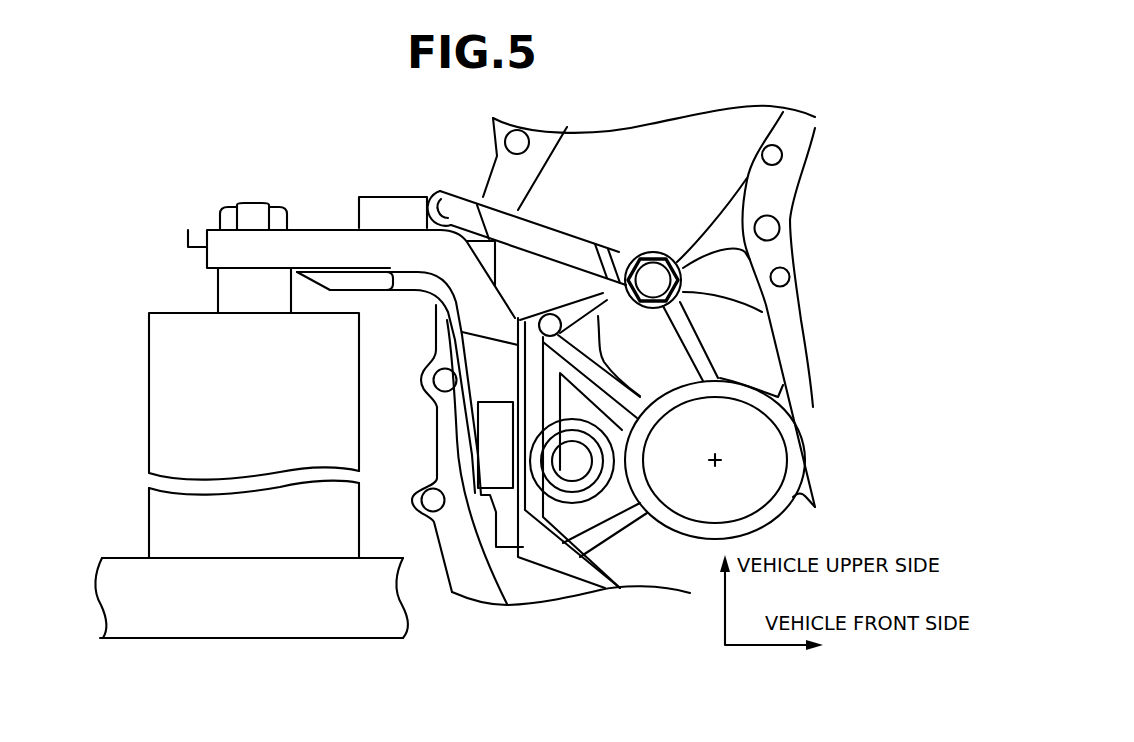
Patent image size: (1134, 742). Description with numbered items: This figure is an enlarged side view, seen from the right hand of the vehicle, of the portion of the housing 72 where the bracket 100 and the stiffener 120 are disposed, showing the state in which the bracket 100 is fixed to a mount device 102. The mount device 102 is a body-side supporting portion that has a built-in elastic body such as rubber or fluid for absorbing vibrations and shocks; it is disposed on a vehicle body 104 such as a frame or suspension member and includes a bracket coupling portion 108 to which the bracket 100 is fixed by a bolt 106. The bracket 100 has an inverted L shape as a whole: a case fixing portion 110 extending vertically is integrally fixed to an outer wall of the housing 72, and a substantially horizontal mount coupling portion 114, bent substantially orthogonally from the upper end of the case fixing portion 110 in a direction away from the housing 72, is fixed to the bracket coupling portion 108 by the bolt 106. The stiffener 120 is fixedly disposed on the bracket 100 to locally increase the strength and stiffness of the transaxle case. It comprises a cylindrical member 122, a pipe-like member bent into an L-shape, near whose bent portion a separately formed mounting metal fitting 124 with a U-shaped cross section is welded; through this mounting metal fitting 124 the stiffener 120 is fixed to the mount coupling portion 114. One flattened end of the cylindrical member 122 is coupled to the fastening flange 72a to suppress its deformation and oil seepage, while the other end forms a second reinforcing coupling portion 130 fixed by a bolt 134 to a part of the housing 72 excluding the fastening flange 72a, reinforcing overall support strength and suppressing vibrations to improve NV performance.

The housing 72 is at (697, 103).
The fastening flange 72a is at (458, 555).
The bracket 100 is at (404, 358).
The mount device 102 is at (170, 427).
The vehicle body 104 is at (225, 622).
The bolt 106 is at (247, 217).
The bracket coupling portion 108 is at (237, 292).
The case fixing portion 110 is at (490, 373).
The mount coupling portion 114 is at (313, 240).
The stiffener 120 is at (643, 209).
The cylindrical member 122 is at (460, 207).
The mounting metal fitting 124 is at (385, 217).
The second reinforcing coupling portion 130 is at (677, 298).
The bolt 134 is at (660, 279).